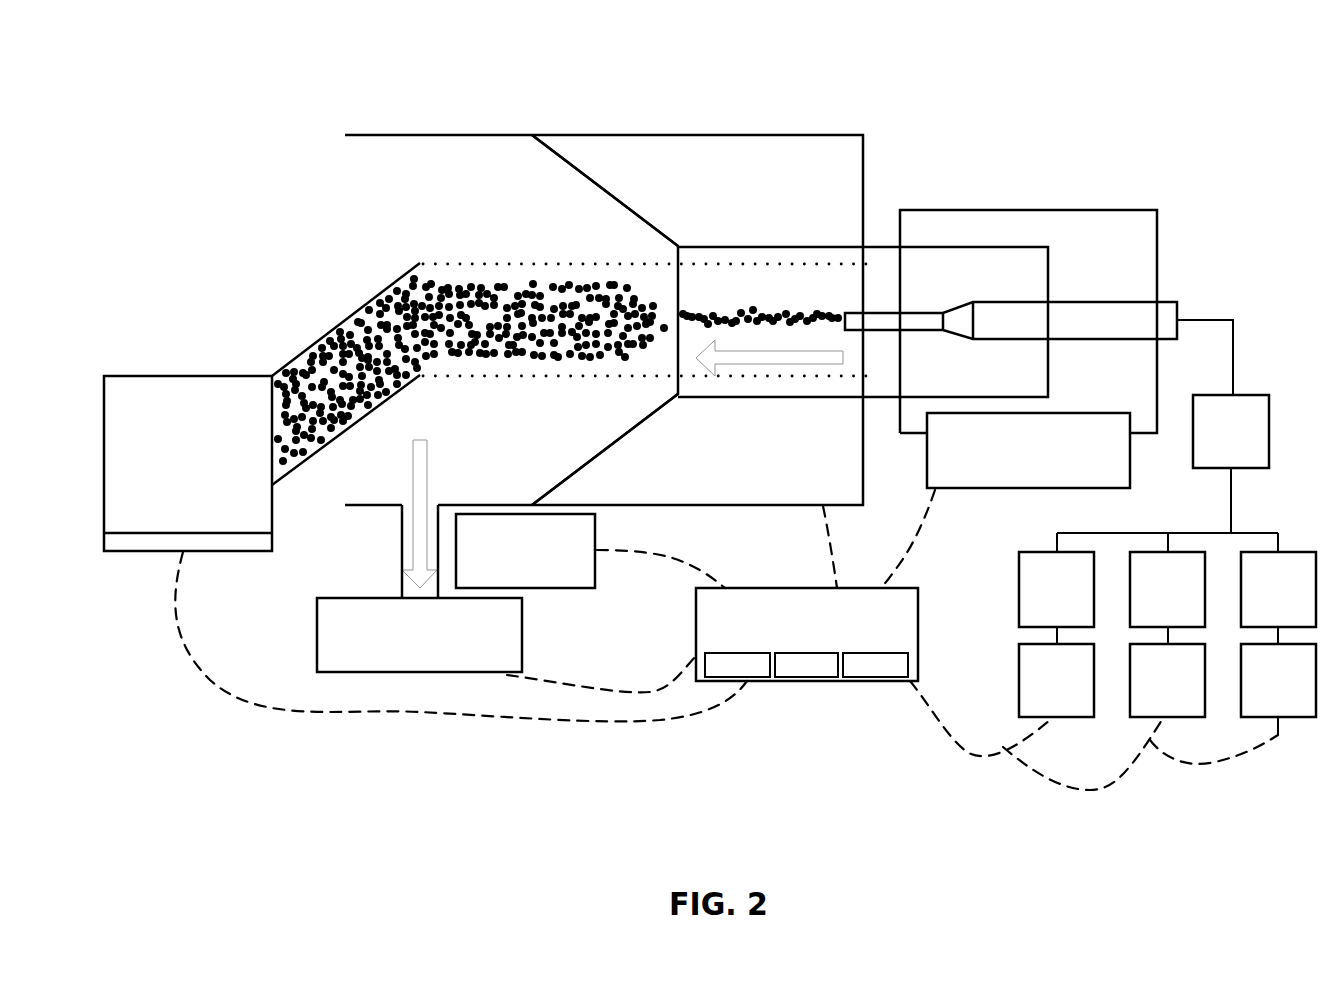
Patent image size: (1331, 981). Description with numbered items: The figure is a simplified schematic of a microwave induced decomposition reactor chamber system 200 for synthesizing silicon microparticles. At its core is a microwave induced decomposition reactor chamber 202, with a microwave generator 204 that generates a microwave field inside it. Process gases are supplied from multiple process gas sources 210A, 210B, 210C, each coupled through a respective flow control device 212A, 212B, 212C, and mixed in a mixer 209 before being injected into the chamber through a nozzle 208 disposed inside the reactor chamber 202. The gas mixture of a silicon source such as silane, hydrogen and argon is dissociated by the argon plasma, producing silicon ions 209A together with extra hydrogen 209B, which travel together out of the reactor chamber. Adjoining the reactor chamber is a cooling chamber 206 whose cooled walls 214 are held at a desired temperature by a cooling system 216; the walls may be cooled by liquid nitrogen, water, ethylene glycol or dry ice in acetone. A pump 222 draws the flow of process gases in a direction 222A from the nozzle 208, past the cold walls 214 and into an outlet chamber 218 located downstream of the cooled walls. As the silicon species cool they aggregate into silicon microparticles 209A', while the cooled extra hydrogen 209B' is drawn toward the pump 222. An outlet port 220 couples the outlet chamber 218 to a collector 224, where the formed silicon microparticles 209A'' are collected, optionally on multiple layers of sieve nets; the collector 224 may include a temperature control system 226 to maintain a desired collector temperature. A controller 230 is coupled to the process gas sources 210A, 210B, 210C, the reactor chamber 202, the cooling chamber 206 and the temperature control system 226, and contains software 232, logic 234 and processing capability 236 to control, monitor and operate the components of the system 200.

The microwave induced decomposition reactor chamber system 200 is at (557, 26).
The microwave induced decomposition reactor chamber 202 is at (1030, 210).
The microwave generator 204 is at (1053, 481).
The cooling chamber 206 is at (770, 135).
The nozzle 208 is at (1085, 302).
The mixer 209 is at (1167, 473).
The silicon ions 209A is at (759, 249).
The extra hydrogen 209B is at (759, 249).
The silicon microparticles 209A' is at (543, 360).
The processed material B / outlet flow 209B' is at (395, 510).
The formed silicon microparticles 209A'' is at (344, 361).
The process gas source 210A is at (1278, 689).
The process gas source 210B is at (1167, 680).
The process gas source 210C is at (1056, 680).
The flow control device 212A is at (1278, 598).
The flow control device 212B is at (1167, 598).
The flow control device 212C is at (1056, 598).
The cooled walls 214 is at (672, 152).
The cooling system 216 is at (530, 580).
The outlet chamber 218 is at (402, 160).
The outlet port 220 is at (301, 353).
The pump 222 is at (502, 616).
The direction 222A is at (775, 358).
The collector 224 is at (217, 376).
The temperature control system 226 is at (243, 541).
The controller 230 is at (905, 630).
The software 232 is at (737, 665).
The logic 234 is at (806, 665).
The controller module 236 is at (875, 665).